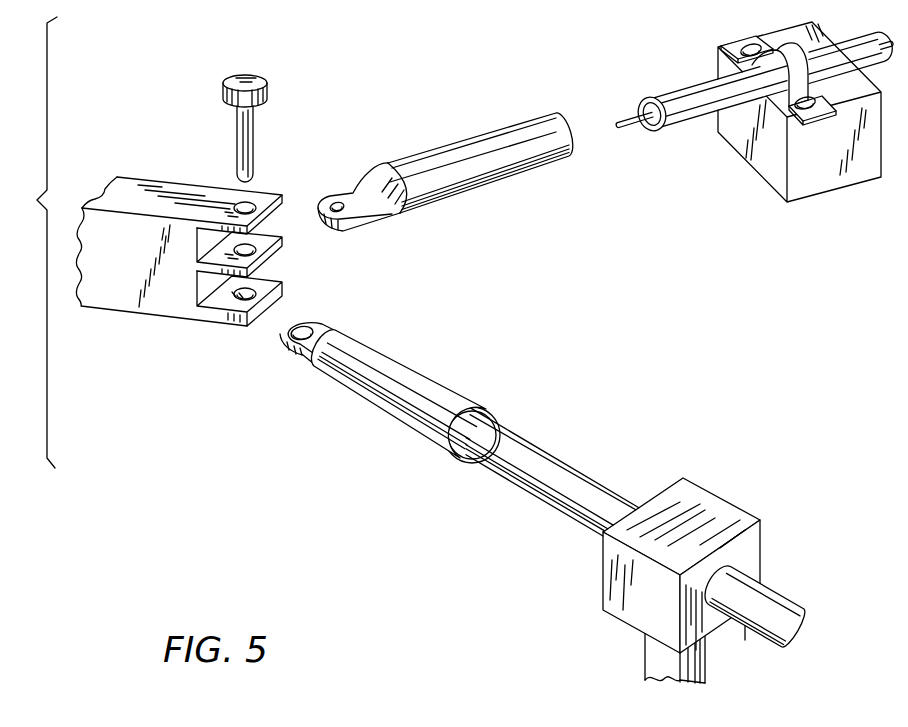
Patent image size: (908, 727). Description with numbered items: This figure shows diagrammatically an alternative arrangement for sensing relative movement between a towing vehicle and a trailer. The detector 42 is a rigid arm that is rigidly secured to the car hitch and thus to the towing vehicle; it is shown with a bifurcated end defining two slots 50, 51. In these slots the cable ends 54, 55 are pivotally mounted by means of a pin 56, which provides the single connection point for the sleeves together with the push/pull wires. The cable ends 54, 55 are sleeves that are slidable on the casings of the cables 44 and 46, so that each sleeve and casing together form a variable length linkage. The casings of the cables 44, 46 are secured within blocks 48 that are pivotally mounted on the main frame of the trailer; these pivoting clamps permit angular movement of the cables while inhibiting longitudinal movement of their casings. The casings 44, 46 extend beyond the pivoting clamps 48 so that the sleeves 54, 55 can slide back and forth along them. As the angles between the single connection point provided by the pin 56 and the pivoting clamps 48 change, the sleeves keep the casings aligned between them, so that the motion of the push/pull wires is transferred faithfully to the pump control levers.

The detector 42 is at (146, 178).
The cable 44 is at (683, 101).
The cable 46 is at (492, 445).
The block 48 is at (827, 179).
The slot 50 is at (275, 229).
The slot 51 is at (275, 272).
The cable end 54 is at (497, 136).
The cable end 55 is at (395, 372).
The pin 56 is at (250, 138).